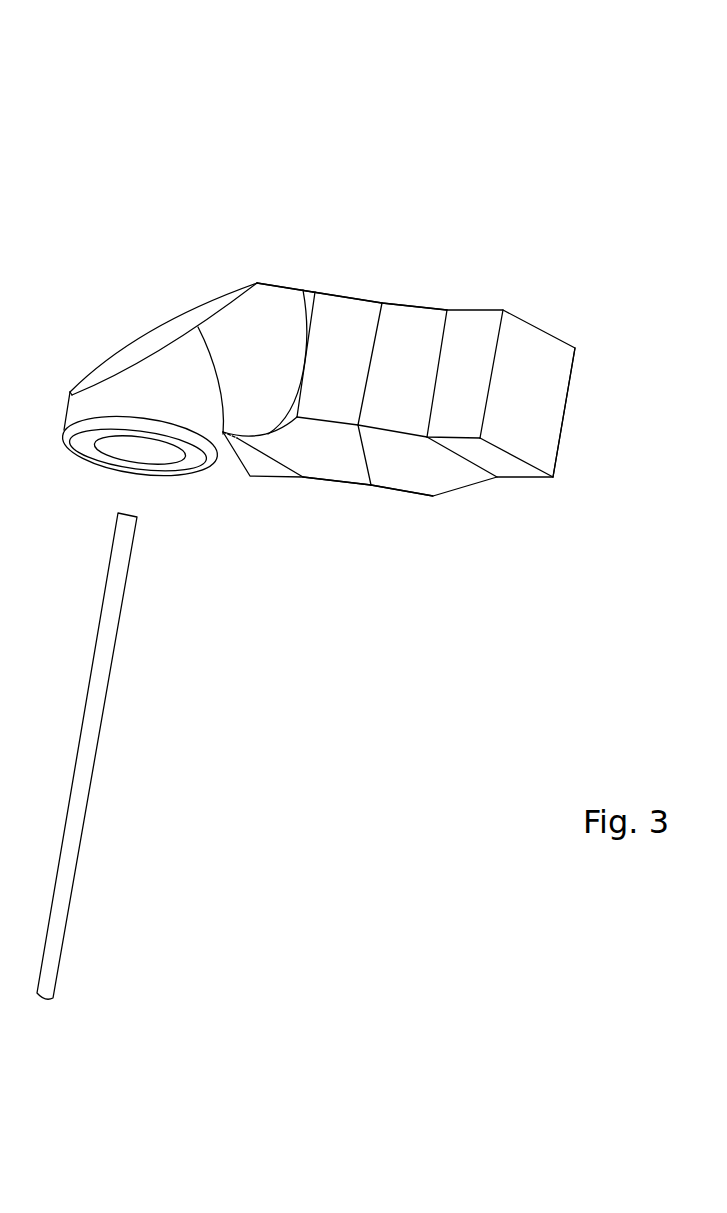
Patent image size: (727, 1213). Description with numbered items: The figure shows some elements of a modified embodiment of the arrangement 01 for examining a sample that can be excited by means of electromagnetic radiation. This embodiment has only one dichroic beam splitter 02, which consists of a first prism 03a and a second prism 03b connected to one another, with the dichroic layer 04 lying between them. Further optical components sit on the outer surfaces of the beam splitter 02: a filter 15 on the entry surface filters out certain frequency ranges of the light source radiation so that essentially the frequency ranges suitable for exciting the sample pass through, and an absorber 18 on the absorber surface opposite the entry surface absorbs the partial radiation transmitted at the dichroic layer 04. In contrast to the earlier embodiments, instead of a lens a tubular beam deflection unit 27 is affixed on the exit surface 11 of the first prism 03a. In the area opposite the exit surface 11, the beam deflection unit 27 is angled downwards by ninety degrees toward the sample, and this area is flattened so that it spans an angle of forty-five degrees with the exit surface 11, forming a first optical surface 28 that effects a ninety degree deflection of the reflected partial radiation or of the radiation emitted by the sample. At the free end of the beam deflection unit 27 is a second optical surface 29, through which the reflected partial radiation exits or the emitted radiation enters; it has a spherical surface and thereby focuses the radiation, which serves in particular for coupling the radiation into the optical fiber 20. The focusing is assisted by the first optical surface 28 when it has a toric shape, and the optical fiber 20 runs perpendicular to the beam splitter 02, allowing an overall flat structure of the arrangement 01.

The arrangement 01 is at (186, 147).
The dichroic beam splitter 02 is at (343, 293).
The first prism 03a is at (348, 473).
The second prism 03b is at (417, 482).
The dichroic layer 04 is at (388, 303).
The exit surface 11 is at (307, 292).
The filter 15 is at (258, 478).
The absorber 18 is at (552, 452).
The optical fiber 20 is at (102, 660).
The beam deflection unit 27 is at (128, 252).
The first optical surface 28 is at (130, 363).
The second optical surface 29 is at (120, 447).